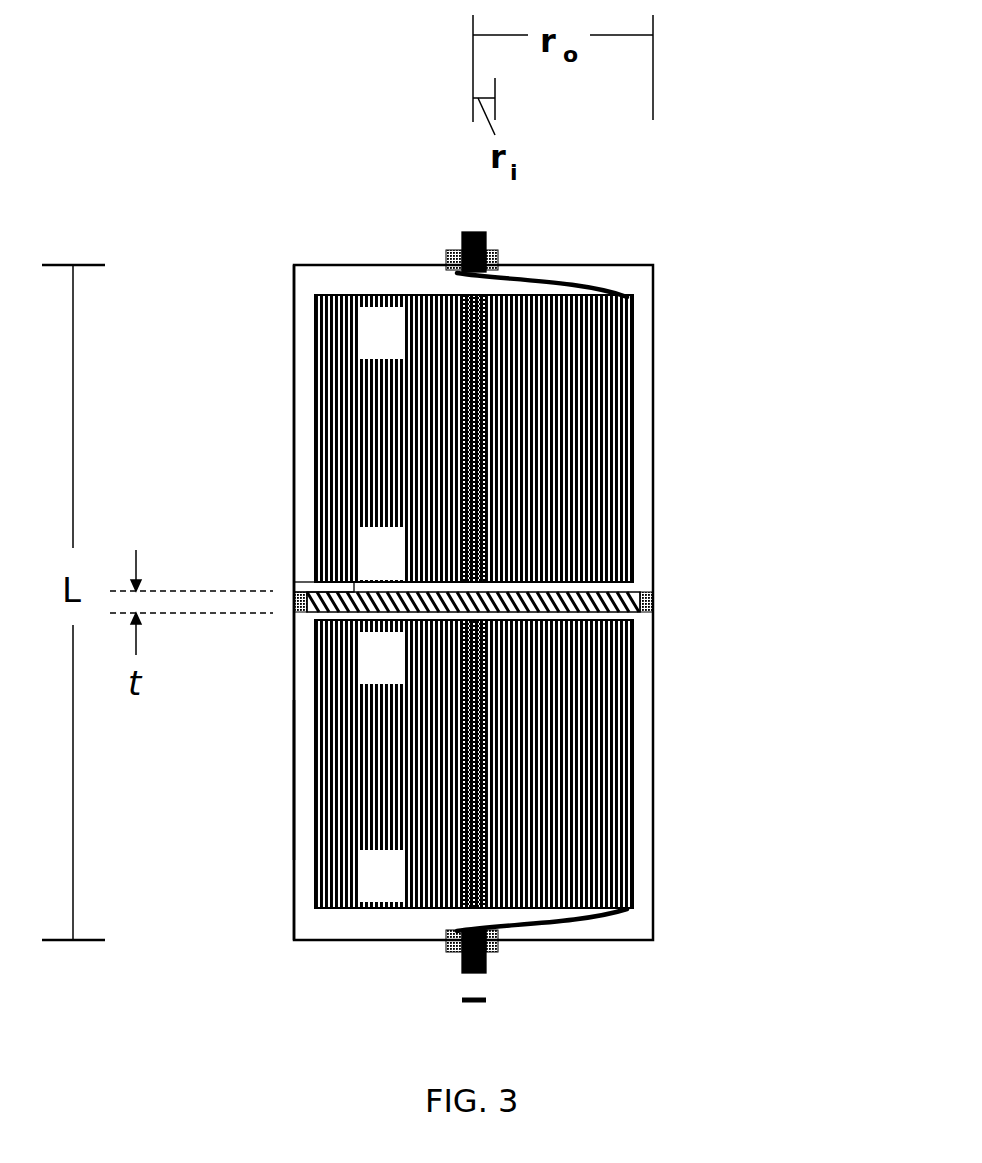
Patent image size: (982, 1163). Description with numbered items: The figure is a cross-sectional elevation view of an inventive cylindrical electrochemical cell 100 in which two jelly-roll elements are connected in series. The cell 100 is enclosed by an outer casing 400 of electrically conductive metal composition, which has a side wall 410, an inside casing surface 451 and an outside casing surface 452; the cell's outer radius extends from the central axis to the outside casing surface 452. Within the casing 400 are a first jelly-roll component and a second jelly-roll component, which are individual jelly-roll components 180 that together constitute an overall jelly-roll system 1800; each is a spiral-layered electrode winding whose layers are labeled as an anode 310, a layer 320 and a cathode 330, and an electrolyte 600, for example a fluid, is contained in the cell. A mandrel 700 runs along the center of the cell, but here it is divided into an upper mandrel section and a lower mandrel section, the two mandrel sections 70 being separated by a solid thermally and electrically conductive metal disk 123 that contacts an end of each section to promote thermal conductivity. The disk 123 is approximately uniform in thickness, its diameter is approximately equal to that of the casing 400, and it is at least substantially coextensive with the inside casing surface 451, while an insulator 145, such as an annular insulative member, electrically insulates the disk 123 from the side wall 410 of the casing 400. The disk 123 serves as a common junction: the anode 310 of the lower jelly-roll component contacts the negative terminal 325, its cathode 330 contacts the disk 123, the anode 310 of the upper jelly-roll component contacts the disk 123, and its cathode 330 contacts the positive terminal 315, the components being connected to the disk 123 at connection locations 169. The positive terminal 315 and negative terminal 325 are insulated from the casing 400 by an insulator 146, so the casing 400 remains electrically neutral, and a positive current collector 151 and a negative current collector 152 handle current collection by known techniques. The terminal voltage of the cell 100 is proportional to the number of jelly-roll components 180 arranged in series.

The cylindrical cell 100 is at (258, 148).
The positive terminal 315 is at (460, 248).
The negative terminal 325 is at (462, 960).
The insulator 146 is at (500, 250).
The positive current collector 151 is at (620, 283).
The negative current collector 152 is at (618, 912).
The mandrel section 70 is at (470, 808).
The electrolyte 600 is at (527, 387).
The mandrel 700 is at (483, 645).
The casing 400 is at (219, 602).
The side wall 410 is at (303, 473).
The jelly-roll system 1800 is at (603, 601).
The jelly-roll component 180 is at (603, 601).
The anode 310 is at (603, 601).
The cathode 320 is at (603, 601).
The cathode 330 is at (395, 718).
The connection location 169 is at (348, 587).
The thermally conductive disk 123 is at (565, 596).
The insulator 145 is at (653, 605).
The inside casing surface 451 is at (315, 718).
The outside casing surface 452 is at (294, 778).